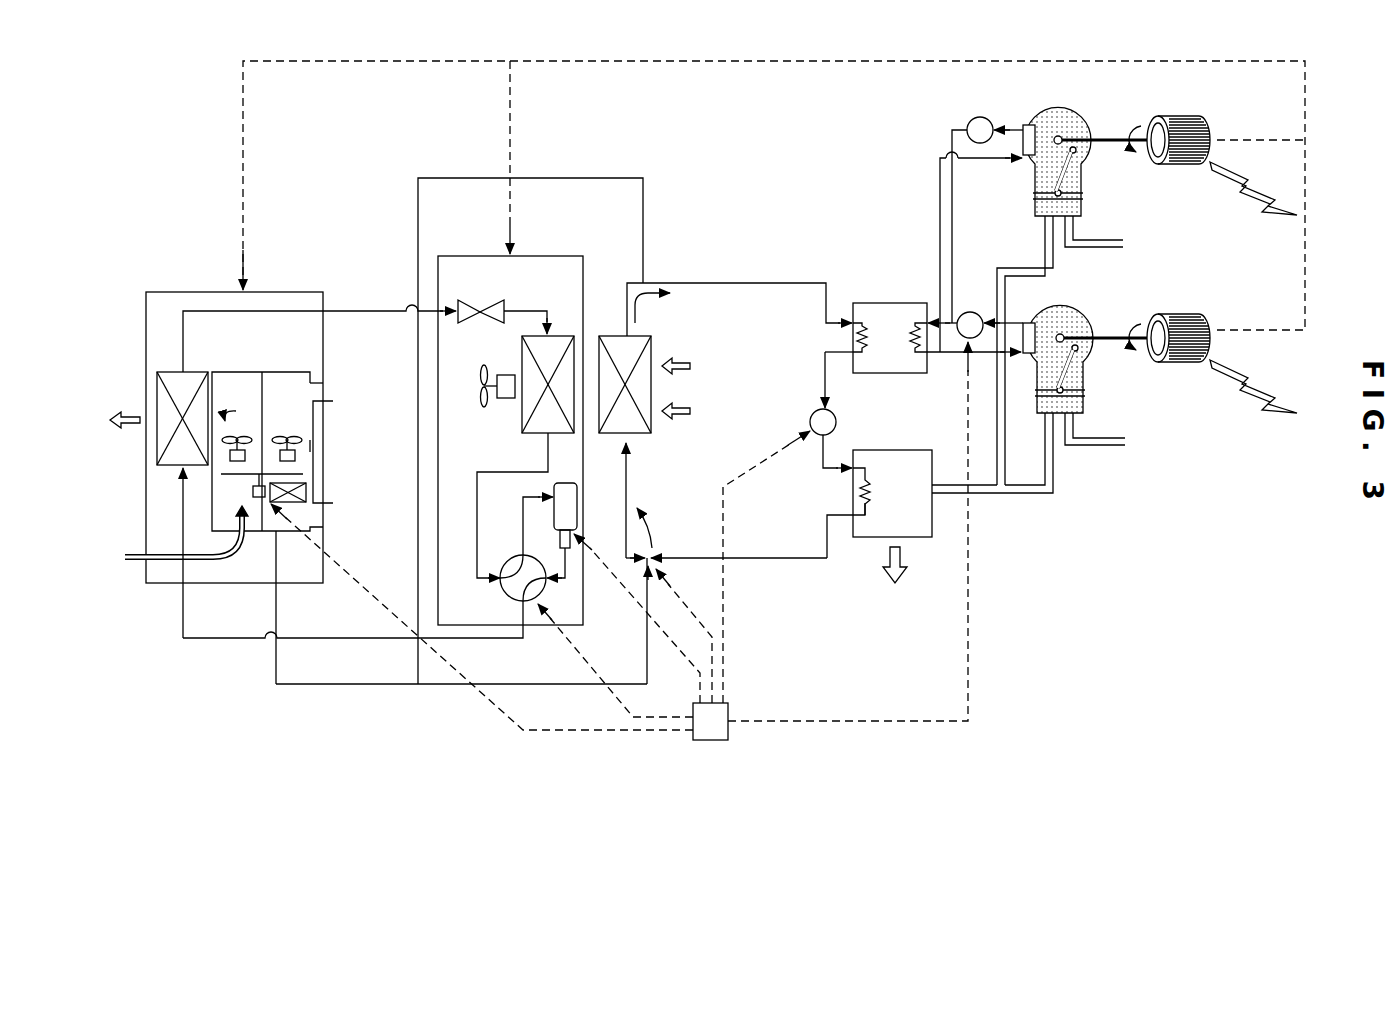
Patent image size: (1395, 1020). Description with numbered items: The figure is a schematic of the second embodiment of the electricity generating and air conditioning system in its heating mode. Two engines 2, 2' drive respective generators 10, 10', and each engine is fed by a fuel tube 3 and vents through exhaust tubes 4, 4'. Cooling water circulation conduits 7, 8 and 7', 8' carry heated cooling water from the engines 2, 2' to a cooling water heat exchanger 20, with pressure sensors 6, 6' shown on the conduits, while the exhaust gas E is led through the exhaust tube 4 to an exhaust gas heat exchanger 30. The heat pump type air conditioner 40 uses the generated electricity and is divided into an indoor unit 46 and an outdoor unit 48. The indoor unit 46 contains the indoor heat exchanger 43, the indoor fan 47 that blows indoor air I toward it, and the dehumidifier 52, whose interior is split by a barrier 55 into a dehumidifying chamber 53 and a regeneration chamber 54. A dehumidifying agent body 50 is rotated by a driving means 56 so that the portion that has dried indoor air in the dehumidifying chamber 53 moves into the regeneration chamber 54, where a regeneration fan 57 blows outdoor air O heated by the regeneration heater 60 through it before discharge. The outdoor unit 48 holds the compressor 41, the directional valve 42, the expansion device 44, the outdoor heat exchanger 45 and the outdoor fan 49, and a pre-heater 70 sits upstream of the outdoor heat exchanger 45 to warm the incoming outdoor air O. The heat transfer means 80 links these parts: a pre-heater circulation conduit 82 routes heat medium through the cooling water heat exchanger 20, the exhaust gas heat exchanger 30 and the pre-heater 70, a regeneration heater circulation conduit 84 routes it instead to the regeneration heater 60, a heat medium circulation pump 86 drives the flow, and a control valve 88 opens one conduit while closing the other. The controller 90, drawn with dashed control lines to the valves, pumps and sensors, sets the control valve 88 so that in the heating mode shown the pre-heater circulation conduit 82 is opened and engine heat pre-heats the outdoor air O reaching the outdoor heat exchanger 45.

The heat pump type air conditioner 40 is at (140, 724).
The indoor unit 46 is at (163, 291).
The indoor heat exchanger 43 is at (163, 408).
The dehumidifying agent body 50 is at (318, 471).
The regeneration chamber 54 is at (307, 446).
The barrier 55 is at (247, 432).
The regeneration fan 57 is at (284, 432).
The indoor fan 47 is at (224, 432).
The driving means 56 is at (253, 492).
The regeneration heater 60 is at (307, 492).
The dehumidifying chamber 53 is at (222, 510).
The indoor air I is at (128, 560).
The dehumidifier 52 is at (265, 552).
The regeneration heater circulation conduit 84 is at (428, 177).
The outdoor unit 48 is at (550, 626).
The expansion device 44 is at (462, 298).
The outdoor heat exchanger 45 is at (540, 350).
The outdoor fan 49 is at (480, 360).
The directional valve 42 is at (510, 598).
The compressor 41 is at (571, 508).
The pre-heater 70 is at (652, 348).
The outdoor air O is at (690, 364).
The pre-heater circulation conduit 82 is at (620, 283).
The control valve 88 is at (678, 548).
The heat medium circulation pump 86 is at (813, 413).
The cooling water heat exchanger 20 is at (887, 313).
The exhaust gas heat exchanger 30 is at (870, 535).
The exhaust gas E is at (900, 555).
The heat transfer means 80 is at (775, 606).
The controller 90 is at (729, 733).
The pressure sensor 6' is at (968, 108).
The cooling water circulation conduit 7' is at (987, 194).
The cooling water circulation conduit 8' is at (981, 252).
The pressure sensor 6 is at (973, 287).
The cooling water circulation conduit 7 is at (977, 276).
The cooling water circulation conduit 8 is at (974, 384).
The engine 2' is at (1085, 161).
The exhaust tube 4' is at (1052, 350).
The fuel tube 3 is at (1103, 246).
The generator 10' is at (1222, 192).
The engine 2 is at (1085, 359).
The exhaust tube 4 is at (992, 488).
The generator 10 is at (1222, 387).